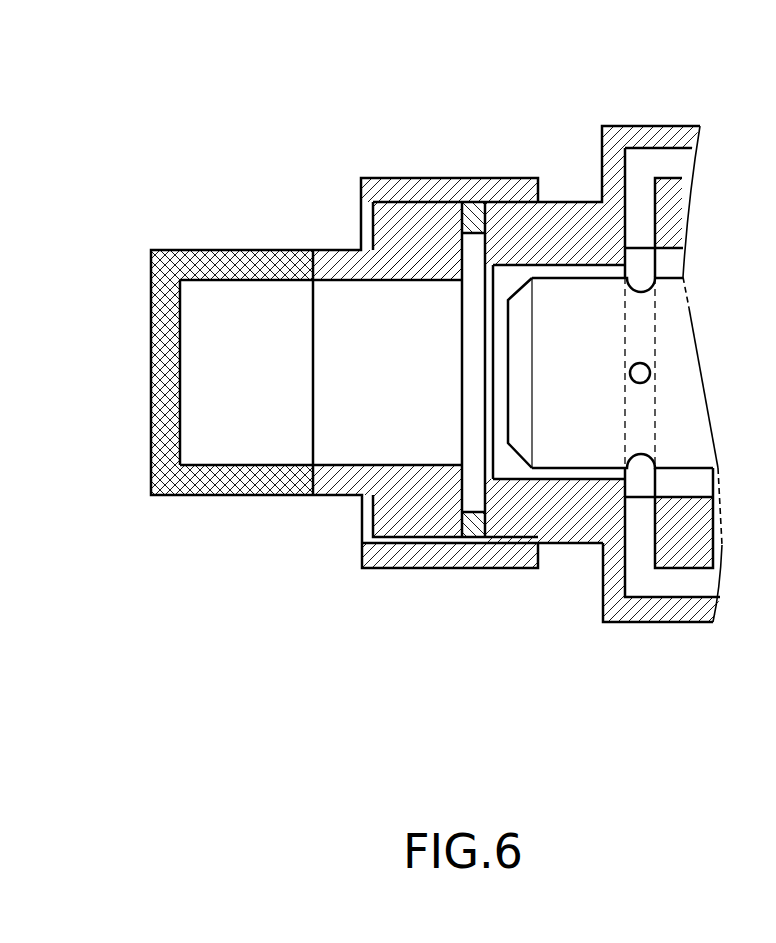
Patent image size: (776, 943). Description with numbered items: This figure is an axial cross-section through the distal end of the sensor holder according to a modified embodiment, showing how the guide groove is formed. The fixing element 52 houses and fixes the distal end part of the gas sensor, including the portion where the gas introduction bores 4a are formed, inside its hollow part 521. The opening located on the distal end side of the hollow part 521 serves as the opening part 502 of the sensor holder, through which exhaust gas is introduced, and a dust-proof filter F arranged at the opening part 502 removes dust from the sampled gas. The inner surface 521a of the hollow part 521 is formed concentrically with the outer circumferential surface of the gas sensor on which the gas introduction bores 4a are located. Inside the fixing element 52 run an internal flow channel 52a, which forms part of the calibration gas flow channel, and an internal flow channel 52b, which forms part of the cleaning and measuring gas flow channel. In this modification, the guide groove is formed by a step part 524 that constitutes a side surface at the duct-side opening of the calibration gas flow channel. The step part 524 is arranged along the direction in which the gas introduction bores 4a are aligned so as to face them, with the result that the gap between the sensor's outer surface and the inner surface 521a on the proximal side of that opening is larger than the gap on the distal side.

The filter F is at (150, 413).
The opening part 502 is at (462, 373).
The hollow part 521 is at (560, 262).
The inner surface of the hollow part 521a is at (507, 263).
The fixing element 52 is at (577, 198).
The step part 524 is at (623, 488).
The internal flow channel 52b is at (662, 146).
The internal flow channel 52a is at (677, 600).
The gas introduction bores 4a is at (628, 455).